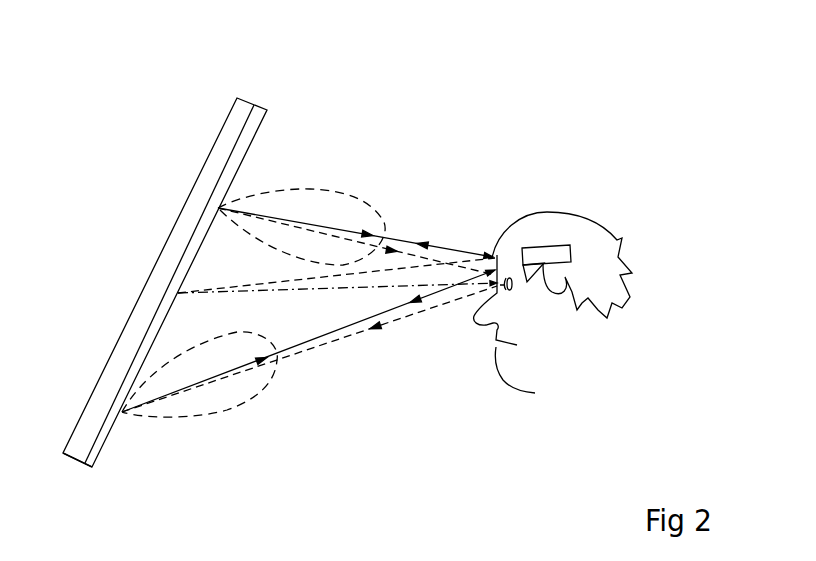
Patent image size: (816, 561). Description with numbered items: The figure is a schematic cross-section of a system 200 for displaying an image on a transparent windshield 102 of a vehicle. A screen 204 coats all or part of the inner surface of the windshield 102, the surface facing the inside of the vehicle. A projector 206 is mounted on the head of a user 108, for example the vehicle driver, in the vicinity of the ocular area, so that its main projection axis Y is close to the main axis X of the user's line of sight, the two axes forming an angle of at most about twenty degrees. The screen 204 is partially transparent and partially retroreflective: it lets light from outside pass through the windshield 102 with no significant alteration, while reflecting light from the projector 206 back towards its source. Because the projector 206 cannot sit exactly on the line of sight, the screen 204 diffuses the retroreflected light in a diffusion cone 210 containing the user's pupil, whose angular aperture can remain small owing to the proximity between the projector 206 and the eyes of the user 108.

The system 200 is at (402, 60).
The transparent windshield 102 is at (227, 135).
The screen 204 is at (90, 468).
The projector 206 is at (549, 256).
The user 108 is at (595, 226).
The diffusion cone 210 is at (335, 190).
The main axis of the user's line of sight X is at (357, 292).
The main projection axis Y is at (283, 283).